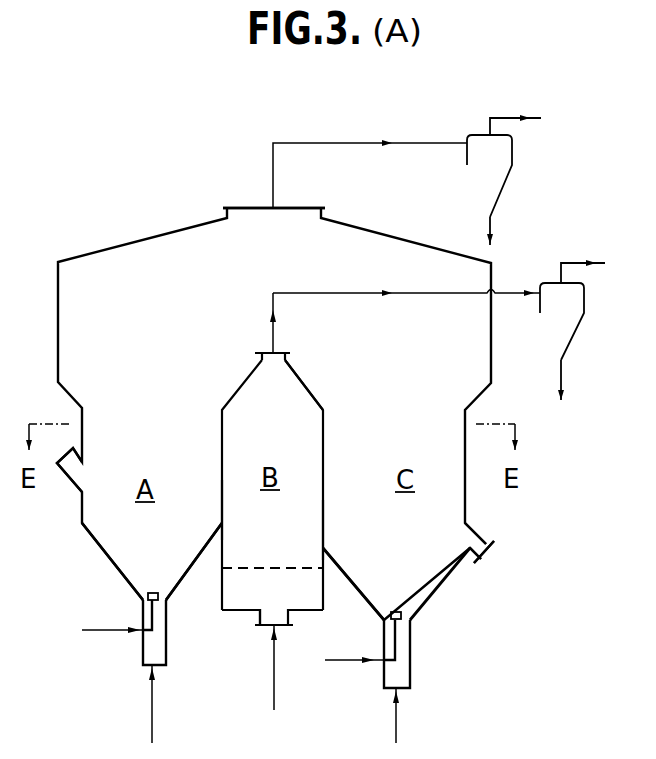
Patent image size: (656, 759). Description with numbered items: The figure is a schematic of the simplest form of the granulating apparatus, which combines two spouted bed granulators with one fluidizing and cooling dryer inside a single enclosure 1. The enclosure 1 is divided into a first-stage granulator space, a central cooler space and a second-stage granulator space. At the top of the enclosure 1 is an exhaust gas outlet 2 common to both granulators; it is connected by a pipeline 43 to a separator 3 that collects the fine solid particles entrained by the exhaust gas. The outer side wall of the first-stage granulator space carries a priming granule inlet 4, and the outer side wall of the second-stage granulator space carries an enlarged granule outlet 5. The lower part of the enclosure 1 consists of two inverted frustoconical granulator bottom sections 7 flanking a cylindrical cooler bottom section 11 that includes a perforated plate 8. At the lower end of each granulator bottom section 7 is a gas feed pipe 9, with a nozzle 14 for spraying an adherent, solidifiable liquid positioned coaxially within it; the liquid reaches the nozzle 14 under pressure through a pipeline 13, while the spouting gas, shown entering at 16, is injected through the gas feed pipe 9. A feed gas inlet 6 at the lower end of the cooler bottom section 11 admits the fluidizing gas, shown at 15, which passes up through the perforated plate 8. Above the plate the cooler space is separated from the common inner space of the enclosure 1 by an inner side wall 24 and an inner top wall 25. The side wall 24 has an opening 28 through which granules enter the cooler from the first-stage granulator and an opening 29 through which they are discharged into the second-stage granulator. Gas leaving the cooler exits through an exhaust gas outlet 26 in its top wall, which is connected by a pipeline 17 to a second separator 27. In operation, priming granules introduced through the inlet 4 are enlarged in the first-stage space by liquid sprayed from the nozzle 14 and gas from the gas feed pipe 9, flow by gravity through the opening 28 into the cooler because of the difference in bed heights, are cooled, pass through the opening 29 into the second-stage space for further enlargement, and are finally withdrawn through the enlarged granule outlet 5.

The enclosure 1 is at (180, 228).
The exhaust gas outlet 2 is at (245, 207).
The gas outlet line to cyclone 43 is at (273, 163).
The separator 3 is at (505, 187).
The priming granule inlet 4 is at (75, 482).
The enlarged granule outlet 5 is at (480, 535).
The inner side wall 24 is at (331, 468).
The inner top wall 25 is at (315, 395).
The exhaust gas outlet 26 is at (273, 352).
The pipeline 17 is at (428, 294).
The separator 27 is at (573, 340).
The opening 28 is at (220, 510).
The opening 29 is at (328, 535).
The perforated plate 8 is at (265, 562).
The feed gas inlet 6 is at (290, 616).
The cooler bottom section 11 is at (243, 618).
The gas inlet to inner vessel 15 is at (272, 675).
The granulator bottom section 7 is at (98, 548).
The gas feed pipe 9 is at (140, 655).
The nozzle 14 is at (157, 592).
The pipeline 13 is at (107, 628).
The bottom gas inlet 16 is at (152, 702).